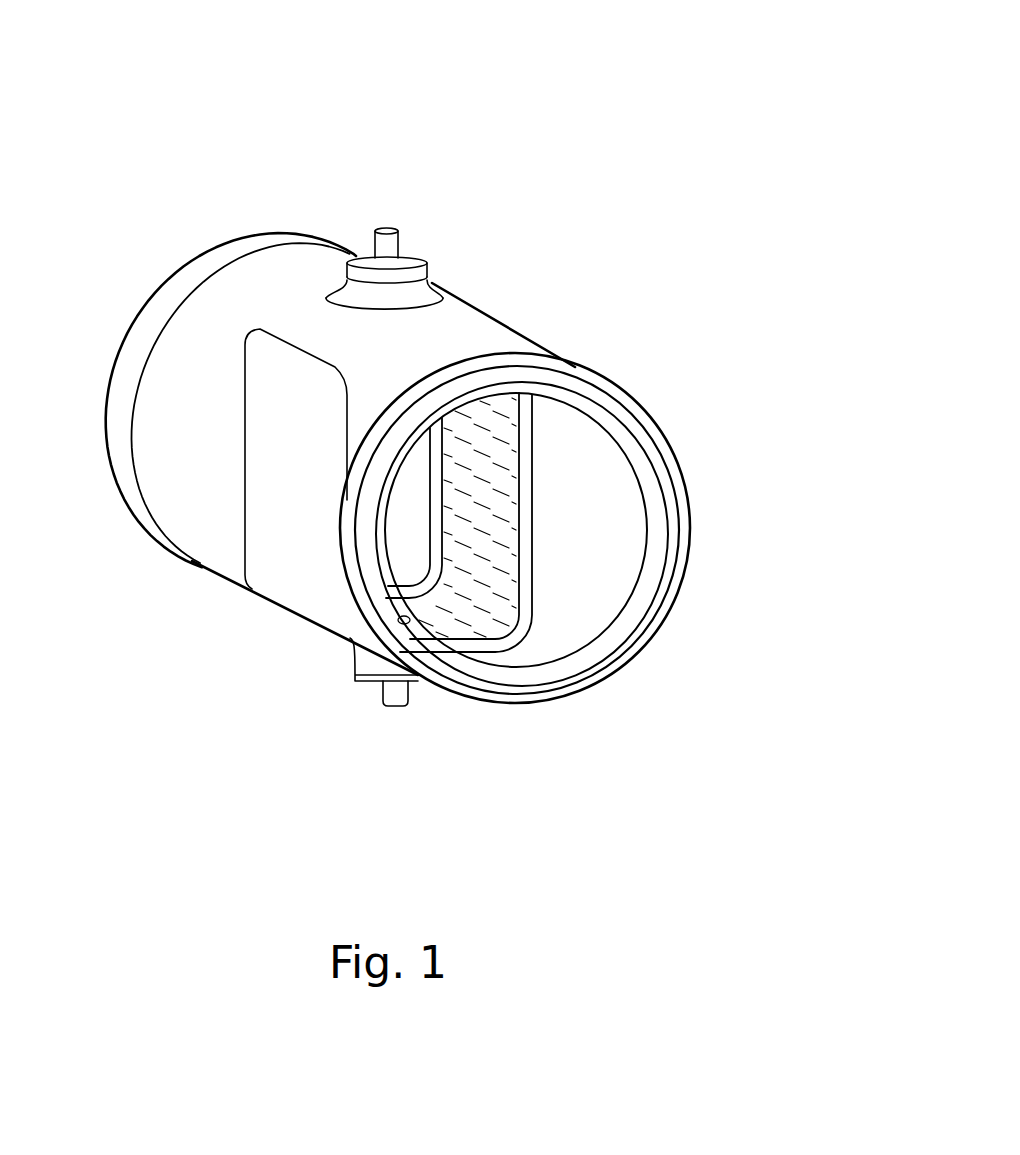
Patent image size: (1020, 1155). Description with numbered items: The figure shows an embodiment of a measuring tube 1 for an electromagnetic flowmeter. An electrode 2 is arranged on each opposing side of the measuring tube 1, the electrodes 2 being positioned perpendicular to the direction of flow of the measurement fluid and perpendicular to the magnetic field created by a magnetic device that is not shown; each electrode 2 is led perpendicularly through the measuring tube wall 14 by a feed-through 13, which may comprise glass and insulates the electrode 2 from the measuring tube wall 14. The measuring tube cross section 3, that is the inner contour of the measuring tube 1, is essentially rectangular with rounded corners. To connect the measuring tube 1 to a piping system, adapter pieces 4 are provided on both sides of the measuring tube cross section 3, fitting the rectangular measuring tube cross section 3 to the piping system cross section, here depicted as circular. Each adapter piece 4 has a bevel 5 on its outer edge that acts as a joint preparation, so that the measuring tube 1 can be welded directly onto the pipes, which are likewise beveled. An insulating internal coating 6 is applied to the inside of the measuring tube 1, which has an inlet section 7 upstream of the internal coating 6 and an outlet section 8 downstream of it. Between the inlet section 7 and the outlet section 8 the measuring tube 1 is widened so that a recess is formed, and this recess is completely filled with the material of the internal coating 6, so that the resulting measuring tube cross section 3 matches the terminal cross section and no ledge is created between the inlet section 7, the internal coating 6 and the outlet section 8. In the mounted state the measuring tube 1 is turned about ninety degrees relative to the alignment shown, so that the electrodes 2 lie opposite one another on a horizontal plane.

The measuring tube 1 is at (576, 207).
The electrode 2 is at (394, 244).
The measuring tube cross section 3 is at (500, 528).
The adapter piece 4 is at (280, 250).
The bevel 5 is at (181, 245).
The internal coating 6 is at (510, 632).
The inlet section 7 is at (412, 571).
The outlet section 8 is at (545, 464).
The feed-through 13 is at (423, 276).
The measuring tube wall 14 is at (498, 320).